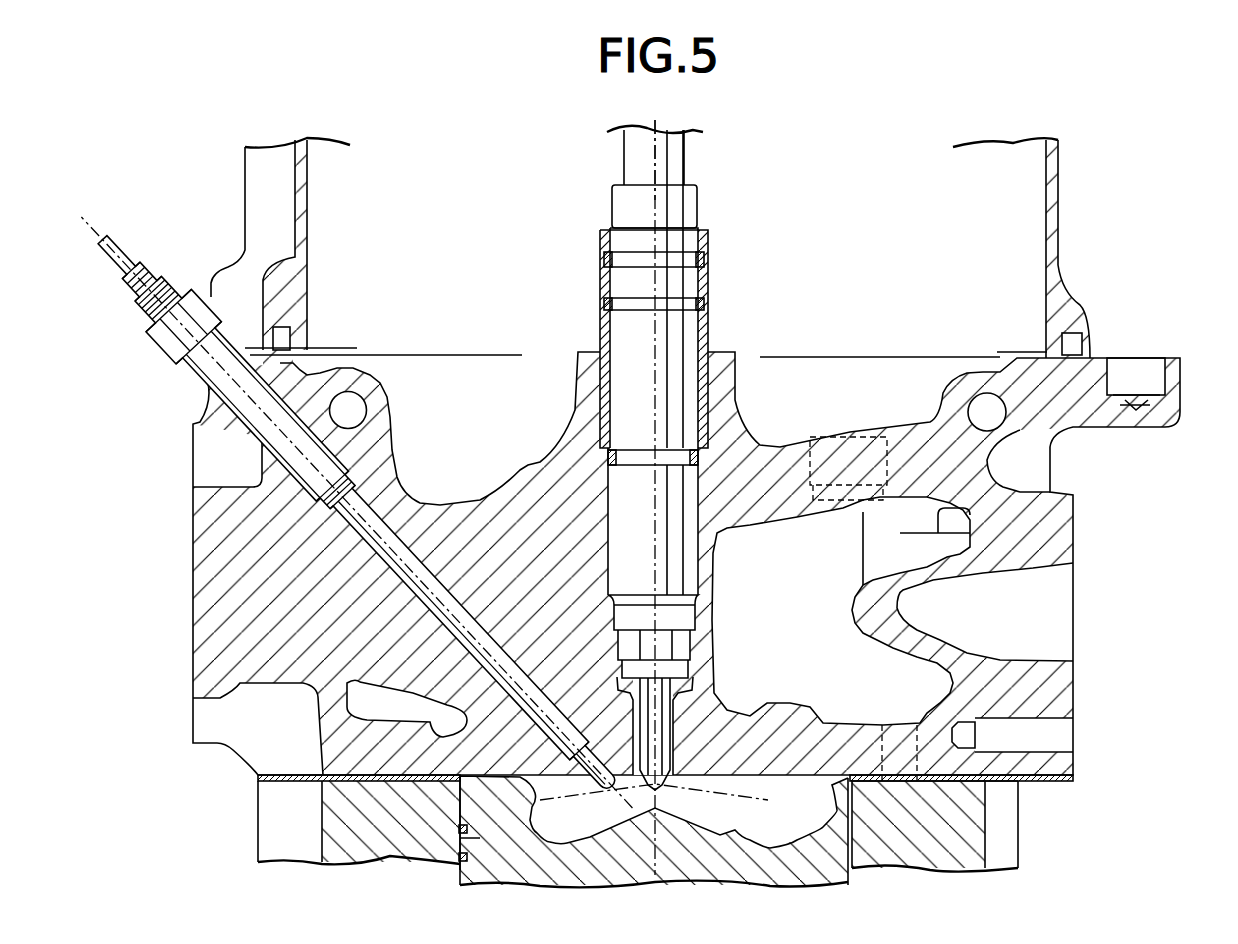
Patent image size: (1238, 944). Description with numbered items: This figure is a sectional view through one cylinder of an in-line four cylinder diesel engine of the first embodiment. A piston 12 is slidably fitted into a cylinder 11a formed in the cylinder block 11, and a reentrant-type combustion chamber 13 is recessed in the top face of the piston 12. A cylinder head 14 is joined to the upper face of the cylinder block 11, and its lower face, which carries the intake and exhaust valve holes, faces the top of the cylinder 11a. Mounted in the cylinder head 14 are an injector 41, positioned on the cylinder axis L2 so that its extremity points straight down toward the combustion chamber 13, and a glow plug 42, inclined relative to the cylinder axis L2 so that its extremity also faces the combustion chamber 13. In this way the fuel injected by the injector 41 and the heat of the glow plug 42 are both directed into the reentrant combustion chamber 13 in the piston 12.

The cylinder block 11 is at (1026, 820).
The cylinder 11a is at (847, 813).
The piston 12 is at (462, 838).
The combustion chamber 13 is at (768, 829).
The cylinder head 14 is at (1082, 530).
The injector 41 is at (625, 325).
The glow plug 42 is at (400, 545).
The cylinder axis L2 is at (662, 160).